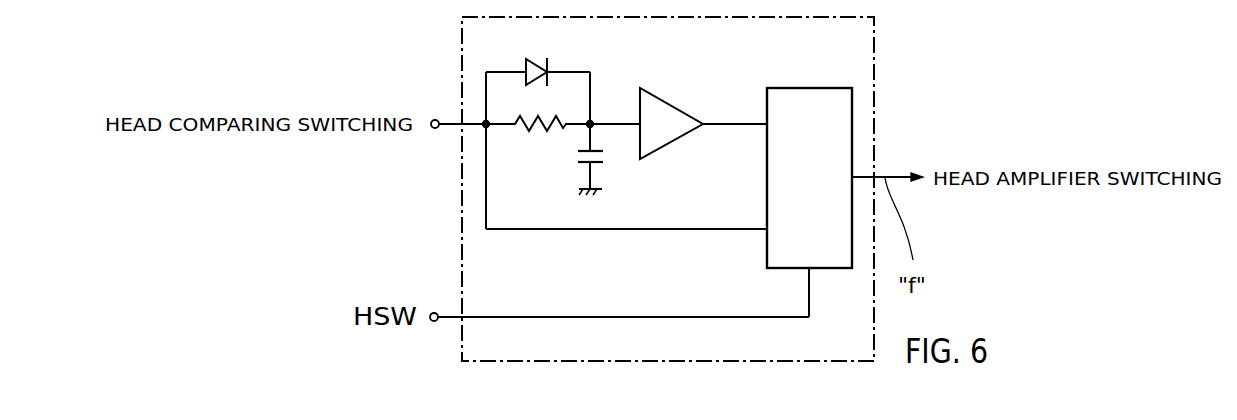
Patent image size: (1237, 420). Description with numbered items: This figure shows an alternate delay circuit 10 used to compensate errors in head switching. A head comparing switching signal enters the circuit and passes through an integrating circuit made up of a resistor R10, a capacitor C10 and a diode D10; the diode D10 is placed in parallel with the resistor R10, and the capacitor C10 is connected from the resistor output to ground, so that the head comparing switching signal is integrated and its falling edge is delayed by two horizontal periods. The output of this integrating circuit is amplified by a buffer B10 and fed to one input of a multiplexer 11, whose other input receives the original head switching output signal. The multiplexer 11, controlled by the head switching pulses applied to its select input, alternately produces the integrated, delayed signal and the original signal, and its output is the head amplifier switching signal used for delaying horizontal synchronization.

The alternate delay circuit 10 is at (668, 209).
The multiplexer 11 is at (800, 88).
The diode D10 is at (540, 56).
The resistor R10 is at (536, 141).
The capacitor C10 is at (578, 165).
The buffer B10 is at (658, 98).